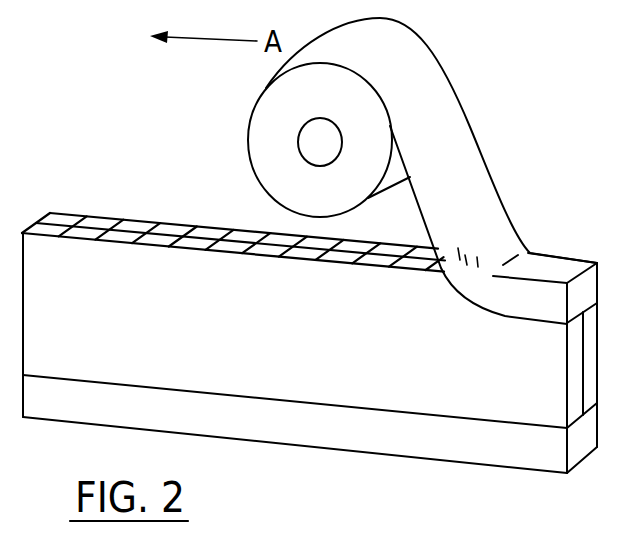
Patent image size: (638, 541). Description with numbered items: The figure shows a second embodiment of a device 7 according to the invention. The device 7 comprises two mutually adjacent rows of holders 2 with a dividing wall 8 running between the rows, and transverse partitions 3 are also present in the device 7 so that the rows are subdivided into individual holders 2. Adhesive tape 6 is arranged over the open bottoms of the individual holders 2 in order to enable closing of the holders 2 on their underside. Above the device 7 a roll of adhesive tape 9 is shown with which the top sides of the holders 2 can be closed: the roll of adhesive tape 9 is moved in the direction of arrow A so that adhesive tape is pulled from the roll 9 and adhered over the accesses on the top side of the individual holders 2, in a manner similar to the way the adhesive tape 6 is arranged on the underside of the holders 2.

The holders 2 is at (68, 218).
The transverse partitions 3 is at (122, 217).
The adhesive tape 6 is at (360, 433).
The device 7 is at (403, 217).
The dividing wall 8 is at (206, 222).
The roll of adhesive tape 9 is at (281, 92).